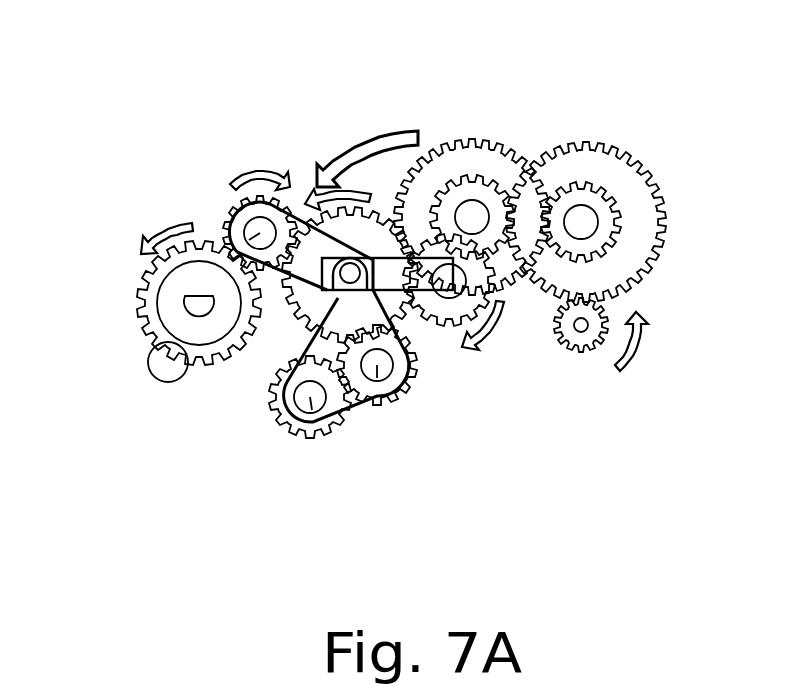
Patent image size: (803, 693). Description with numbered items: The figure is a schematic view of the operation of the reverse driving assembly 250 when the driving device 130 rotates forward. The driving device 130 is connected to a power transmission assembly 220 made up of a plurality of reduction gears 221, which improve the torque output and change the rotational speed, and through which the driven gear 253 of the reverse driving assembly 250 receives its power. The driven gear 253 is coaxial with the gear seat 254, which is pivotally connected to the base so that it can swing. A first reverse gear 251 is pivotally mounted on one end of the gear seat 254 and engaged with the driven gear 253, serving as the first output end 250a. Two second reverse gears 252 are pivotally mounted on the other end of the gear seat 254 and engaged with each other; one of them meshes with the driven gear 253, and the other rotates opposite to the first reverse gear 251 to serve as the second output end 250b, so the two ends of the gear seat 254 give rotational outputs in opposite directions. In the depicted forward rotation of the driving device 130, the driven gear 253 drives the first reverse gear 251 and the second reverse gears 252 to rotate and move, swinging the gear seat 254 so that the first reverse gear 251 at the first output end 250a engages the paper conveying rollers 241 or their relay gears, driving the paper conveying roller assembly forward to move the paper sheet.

The driving device 130 is at (590, 324).
The power transmission assembly 220 is at (512, 145).
The reduction gears 221 is at (473, 220).
The paper conveying rollers 241 is at (197, 301).
The reverse driving assembly 250 is at (244, 362).
The first output end 250a is at (216, 222).
The second output end 250b is at (280, 437).
The first reverse gear 251 is at (232, 230).
The second reverse gears 252 is at (376, 380).
The driven gear 253 is at (313, 313).
The gear seat 254 is at (302, 220).